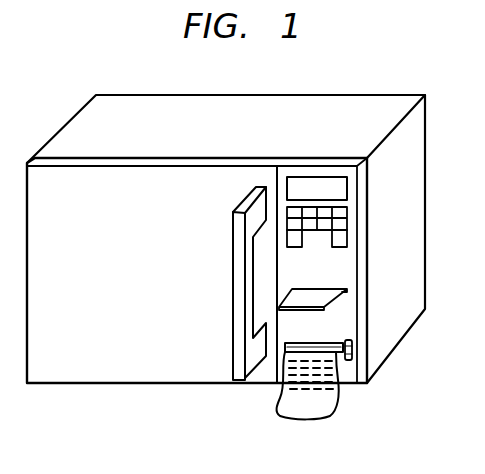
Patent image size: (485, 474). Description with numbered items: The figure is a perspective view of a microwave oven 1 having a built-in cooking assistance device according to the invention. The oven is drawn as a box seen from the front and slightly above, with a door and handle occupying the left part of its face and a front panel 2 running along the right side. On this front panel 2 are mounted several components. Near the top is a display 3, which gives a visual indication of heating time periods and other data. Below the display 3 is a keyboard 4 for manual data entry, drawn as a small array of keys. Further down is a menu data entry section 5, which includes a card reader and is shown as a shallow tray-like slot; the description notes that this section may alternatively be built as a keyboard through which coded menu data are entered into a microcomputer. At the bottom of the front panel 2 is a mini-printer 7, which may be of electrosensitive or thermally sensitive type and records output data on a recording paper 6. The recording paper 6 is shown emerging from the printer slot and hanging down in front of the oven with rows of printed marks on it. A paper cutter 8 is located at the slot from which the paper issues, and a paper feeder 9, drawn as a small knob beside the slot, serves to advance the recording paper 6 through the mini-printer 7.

The microwave oven 1 is at (190, 110).
The front panel 2 is at (347, 330).
The display 3 is at (324, 177).
The keyboard 4 is at (342, 227).
The menu data entry section 5 is at (327, 290).
The recording paper 6 is at (324, 404).
The mini-printer 7 is at (277, 373).
The paper cutter 8 is at (325, 350).
The paper feeder 9 is at (352, 354).